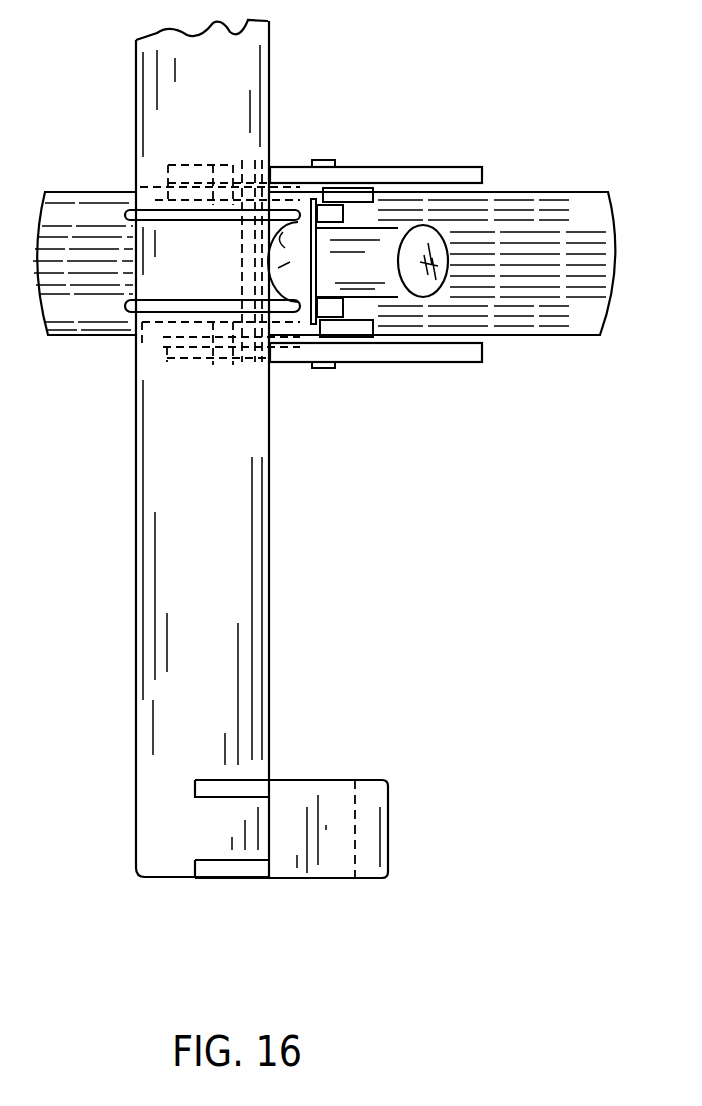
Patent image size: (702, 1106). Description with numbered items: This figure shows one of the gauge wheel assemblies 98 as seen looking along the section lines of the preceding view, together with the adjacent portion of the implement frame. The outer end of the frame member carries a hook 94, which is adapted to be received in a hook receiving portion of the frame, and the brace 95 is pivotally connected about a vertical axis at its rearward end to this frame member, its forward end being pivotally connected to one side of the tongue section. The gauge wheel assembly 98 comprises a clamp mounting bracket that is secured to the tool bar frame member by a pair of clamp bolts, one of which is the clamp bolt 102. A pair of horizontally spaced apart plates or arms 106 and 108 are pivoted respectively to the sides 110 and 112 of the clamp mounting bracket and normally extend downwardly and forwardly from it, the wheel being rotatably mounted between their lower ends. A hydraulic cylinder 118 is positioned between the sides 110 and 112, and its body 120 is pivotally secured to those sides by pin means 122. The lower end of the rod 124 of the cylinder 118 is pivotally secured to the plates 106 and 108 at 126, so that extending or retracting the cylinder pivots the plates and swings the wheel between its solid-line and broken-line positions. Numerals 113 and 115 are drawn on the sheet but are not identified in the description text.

The hook 94 is at (365, 863).
The brace 95 is at (157, 568).
The gauge wheel assembly 98 is at (421, 484).
The clamp bolt 102 is at (128, 213).
The plate or arm 106 is at (442, 355).
The plate or arm 108 is at (407, 165).
The side of clamp mounting bracket 110 is at (350, 325).
The side of clamp mounting bracket 112 is at (291, 197).
The lower bracket 113 is at (217, 368).
The upper bracket 115 is at (220, 160).
The hydraulic cylinder 118 is at (438, 245).
The cylinder body 120 is at (380, 274).
The pin means 122 is at (323, 327).
The rod 124 is at (358, 158).
The pivotal connection of rod to plates 126 is at (265, 152).